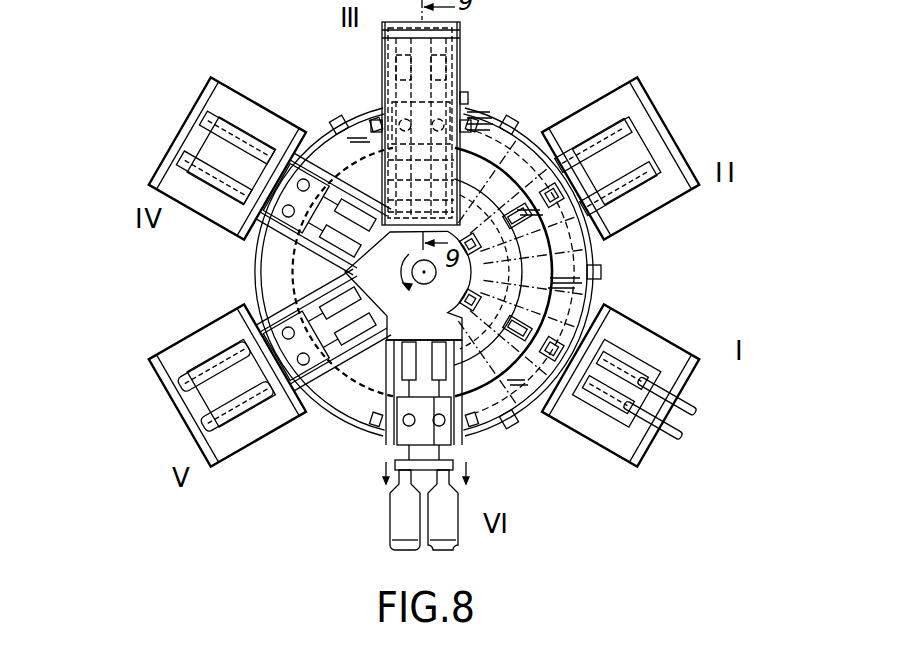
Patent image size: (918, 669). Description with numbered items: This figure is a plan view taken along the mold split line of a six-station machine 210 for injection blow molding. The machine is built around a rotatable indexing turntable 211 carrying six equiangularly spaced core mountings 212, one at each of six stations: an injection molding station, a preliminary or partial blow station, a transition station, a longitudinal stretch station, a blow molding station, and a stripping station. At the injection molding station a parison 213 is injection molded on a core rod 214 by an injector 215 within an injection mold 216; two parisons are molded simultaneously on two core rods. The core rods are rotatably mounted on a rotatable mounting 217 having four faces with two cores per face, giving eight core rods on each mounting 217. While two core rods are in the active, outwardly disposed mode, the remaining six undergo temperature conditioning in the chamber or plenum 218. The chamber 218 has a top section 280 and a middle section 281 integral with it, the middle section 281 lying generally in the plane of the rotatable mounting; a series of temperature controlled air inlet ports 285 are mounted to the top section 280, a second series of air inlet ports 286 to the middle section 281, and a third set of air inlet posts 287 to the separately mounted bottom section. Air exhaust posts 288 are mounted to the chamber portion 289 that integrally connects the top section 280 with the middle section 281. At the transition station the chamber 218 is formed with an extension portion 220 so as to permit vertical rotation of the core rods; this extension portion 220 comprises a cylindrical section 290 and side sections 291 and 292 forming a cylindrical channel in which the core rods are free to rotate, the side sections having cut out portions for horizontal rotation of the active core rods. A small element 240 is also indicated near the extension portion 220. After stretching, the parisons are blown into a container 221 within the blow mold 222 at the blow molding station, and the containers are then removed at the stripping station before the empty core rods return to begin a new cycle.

The six-station machine 210 is at (647, 47).
The rotatable indexing turntable 211 is at (321, 272).
The core mountings 212 is at (603, 294).
The parison 213 is at (640, 370).
The core rod 214 is at (623, 362).
The injector 215 is at (695, 400).
The injection mold 216 is at (617, 338).
The rotatable mounting 217 is at (530, 400).
The temperature conditioning chamber or plenum 218 is at (575, 268).
The extension portion 220 is at (425, 123).
The container 221 is at (228, 430).
The blow mold 222 is at (170, 380).
The side tab 240 is at (465, 98).
The top section 280 is at (645, 104).
The middle section 281 is at (600, 283).
The air inlet ports 285 is at (560, 204).
The air inlet ports 286 is at (557, 198).
The air inlet posts 287 is at (508, 422).
The air exhaust posts 288 is at (553, 176).
The chamber portion 289 is at (600, 257).
The cylindrical section 290 is at (390, 37).
The side section 291 is at (382, 70).
The side section 292 is at (487, 168).